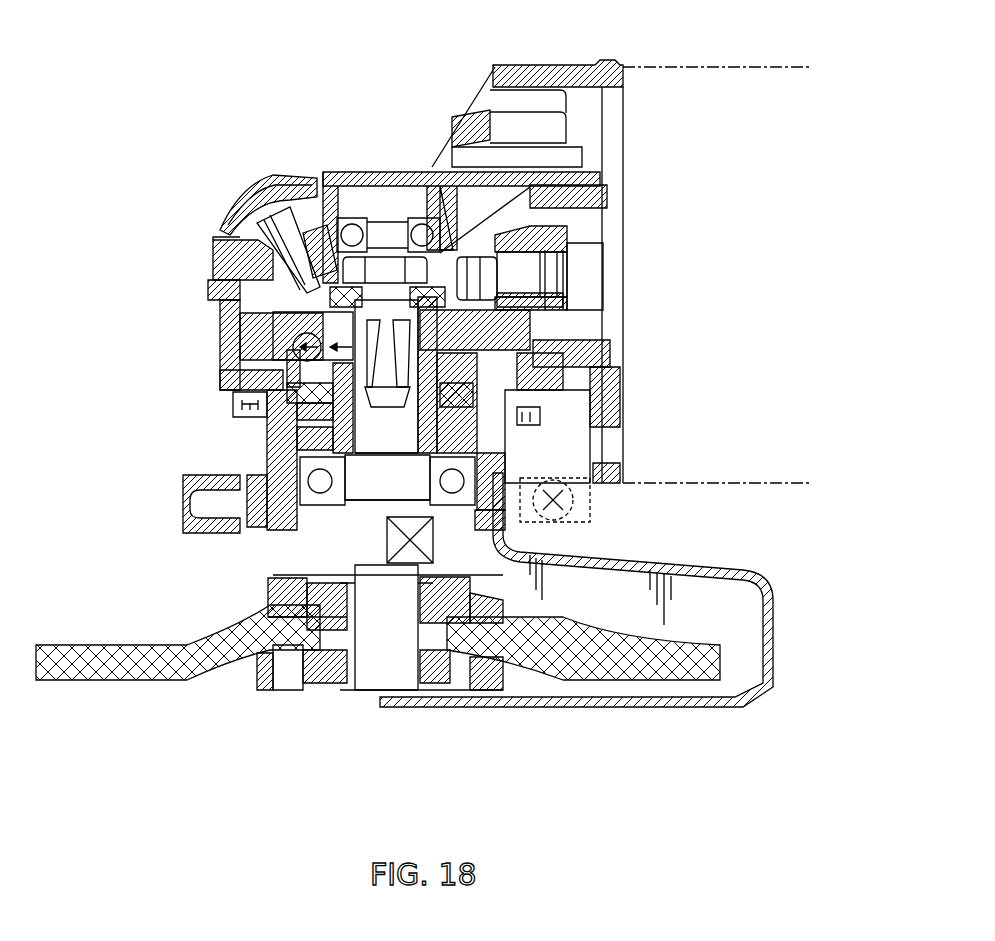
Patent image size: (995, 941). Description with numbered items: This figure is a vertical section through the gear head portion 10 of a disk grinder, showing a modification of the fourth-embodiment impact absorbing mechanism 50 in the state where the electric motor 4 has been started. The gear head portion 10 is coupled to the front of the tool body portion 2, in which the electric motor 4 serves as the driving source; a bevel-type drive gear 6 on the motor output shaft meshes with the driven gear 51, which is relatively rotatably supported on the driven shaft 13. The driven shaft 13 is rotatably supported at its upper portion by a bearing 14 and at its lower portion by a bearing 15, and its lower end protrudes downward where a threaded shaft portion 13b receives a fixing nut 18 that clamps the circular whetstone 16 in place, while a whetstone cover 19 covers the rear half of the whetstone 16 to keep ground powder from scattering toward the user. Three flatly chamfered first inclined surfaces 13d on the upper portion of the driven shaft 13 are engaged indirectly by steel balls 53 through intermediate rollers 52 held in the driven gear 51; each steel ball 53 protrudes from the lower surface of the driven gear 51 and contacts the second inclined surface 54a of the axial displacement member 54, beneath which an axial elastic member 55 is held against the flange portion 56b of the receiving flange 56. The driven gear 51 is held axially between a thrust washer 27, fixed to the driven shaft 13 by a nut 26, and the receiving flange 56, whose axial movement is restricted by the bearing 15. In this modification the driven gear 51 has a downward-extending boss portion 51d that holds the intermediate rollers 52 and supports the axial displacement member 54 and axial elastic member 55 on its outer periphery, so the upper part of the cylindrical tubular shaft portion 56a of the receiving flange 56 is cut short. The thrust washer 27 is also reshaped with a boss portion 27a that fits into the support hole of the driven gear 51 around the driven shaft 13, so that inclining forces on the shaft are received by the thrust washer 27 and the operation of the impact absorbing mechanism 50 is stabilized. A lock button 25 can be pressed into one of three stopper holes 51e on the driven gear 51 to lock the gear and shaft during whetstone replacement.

The gear head portion 10 is at (446, 60).
The tool body portion 2 is at (715, 95).
The electric motor 4 is at (583, 253).
The drive gear 6 is at (493, 300).
The stopper hole 51e is at (470, 292).
The first inclined surface 13d is at (217, 243).
The thrust washer 27 is at (322, 195).
The boss portion 27a is at (230, 228).
The lock button 25 is at (278, 235).
The bearing 14 is at (352, 230).
The nut 26 is at (385, 270).
The impact absorbing mechanism 50 is at (212, 312).
The driven gear 51 is at (300, 300).
The intermediate roller 52 is at (210, 283).
The steel ball 53 is at (327, 333).
The axial displacement member 54 is at (283, 373).
The second inclined surface 54a is at (533, 332).
The axial elastic member 55 is at (285, 418).
The receiving flange 56 is at (465, 577).
The cylindrical tubular shaft portion 56a is at (387, 477).
The flange portion 56b is at (503, 403).
The boss portion 51d is at (477, 430).
The driven shaft 13 is at (430, 460).
The threaded shaft portion 13b is at (385, 660).
The bearing 15 is at (277, 533).
The whetstone 16 is at (137, 673).
The fixing nut 18 is at (313, 680).
The whetstone cover 19 is at (773, 657).